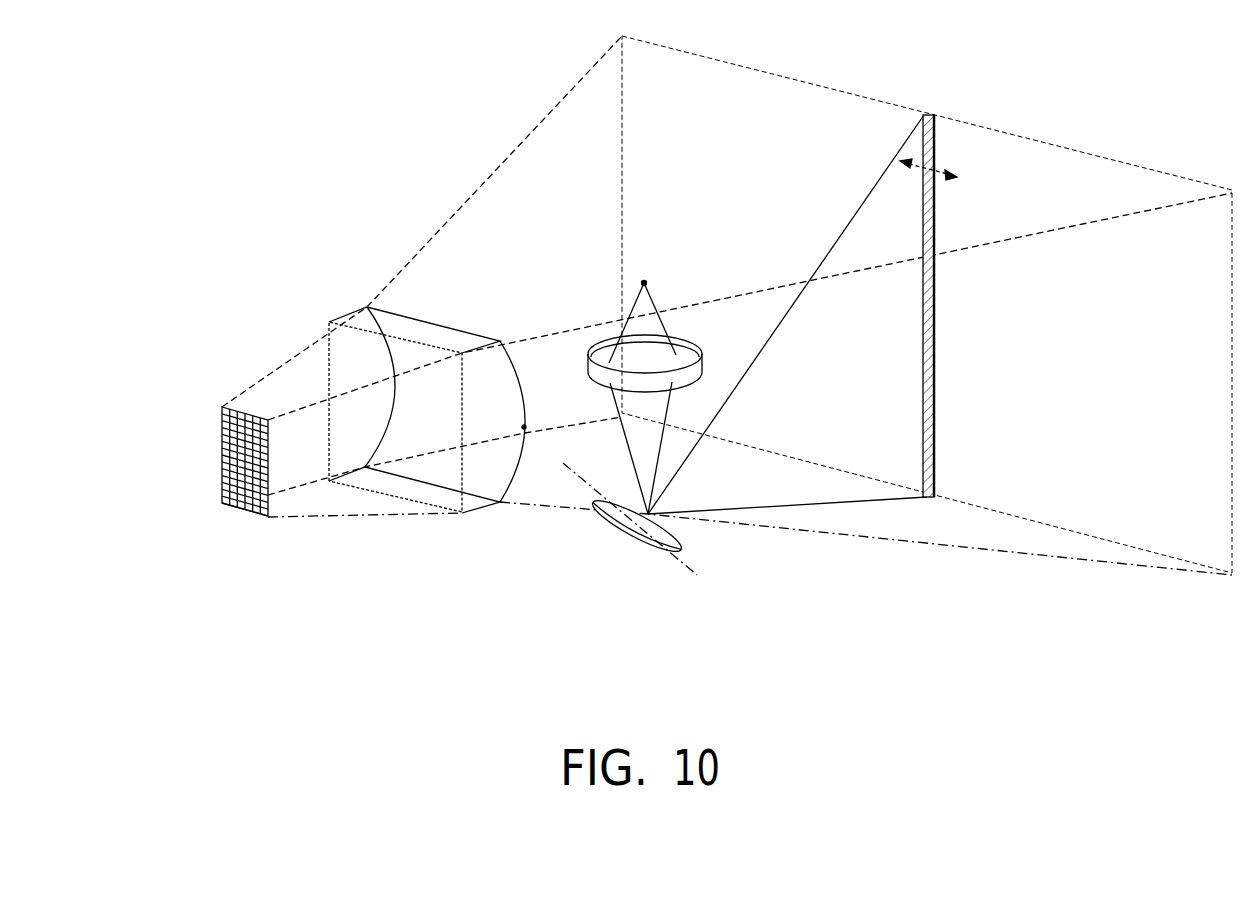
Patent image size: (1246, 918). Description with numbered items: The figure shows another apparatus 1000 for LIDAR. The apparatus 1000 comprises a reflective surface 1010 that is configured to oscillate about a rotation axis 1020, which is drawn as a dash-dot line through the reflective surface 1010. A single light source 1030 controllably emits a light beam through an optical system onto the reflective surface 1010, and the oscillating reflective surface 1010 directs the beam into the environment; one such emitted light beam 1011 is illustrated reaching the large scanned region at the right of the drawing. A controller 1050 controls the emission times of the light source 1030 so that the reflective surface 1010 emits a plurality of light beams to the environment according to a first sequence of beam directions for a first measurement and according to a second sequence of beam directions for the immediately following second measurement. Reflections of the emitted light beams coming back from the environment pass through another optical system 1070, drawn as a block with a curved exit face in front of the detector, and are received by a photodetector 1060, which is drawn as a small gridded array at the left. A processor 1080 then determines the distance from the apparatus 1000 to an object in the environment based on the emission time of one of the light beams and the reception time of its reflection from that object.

The apparatus for LIDAR 1000 is at (282, 710).
The reflective surface 1010 is at (633, 538).
The light beam 1011 is at (934, 437).
The rotation axis 1020 is at (707, 593).
The light source 1030 is at (642, 282).
The controller 1050 is at (530, 251).
The photodetector 1060 is at (223, 435).
The optical system 1070 is at (475, 512).
The processor 1080 is at (243, 512).